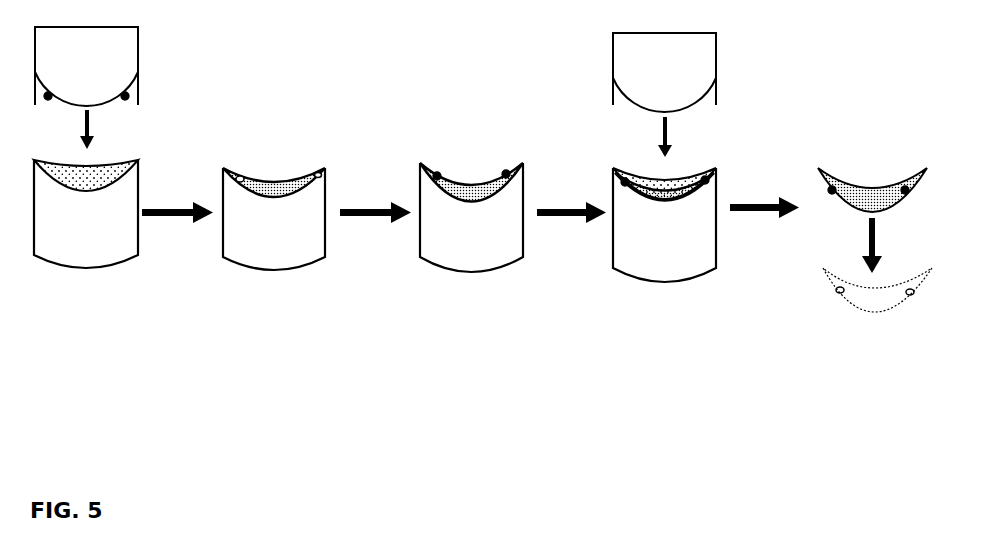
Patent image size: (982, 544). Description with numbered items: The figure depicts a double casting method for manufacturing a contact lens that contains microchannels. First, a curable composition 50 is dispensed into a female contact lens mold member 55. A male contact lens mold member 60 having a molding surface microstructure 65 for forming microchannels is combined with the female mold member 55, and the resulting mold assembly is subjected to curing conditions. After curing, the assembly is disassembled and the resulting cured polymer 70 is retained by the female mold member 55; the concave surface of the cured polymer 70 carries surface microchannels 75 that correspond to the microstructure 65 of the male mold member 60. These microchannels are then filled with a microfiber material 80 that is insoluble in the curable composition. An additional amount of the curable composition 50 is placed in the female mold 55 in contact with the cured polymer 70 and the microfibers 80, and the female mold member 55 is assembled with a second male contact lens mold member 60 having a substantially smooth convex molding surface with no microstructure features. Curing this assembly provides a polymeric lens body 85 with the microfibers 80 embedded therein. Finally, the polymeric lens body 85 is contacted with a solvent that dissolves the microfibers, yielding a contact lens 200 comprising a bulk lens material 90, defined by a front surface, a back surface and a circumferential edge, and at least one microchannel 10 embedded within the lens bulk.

The microchannel 10 is at (843, 295).
The curable composition 50 is at (80, 172).
The female contact lens mold member 55 is at (92, 243).
The male contact lens mold member 60 is at (118, 57).
The molding surface microstructure 65 is at (130, 96).
The cured polymer 70 is at (288, 180).
The surface microchannels 75 is at (240, 178).
The microfiber material 80 is at (440, 175).
The polymeric lens body 85 is at (872, 188).
The bulk lens material 90 is at (868, 300).
The contact lens 200 is at (818, 291).